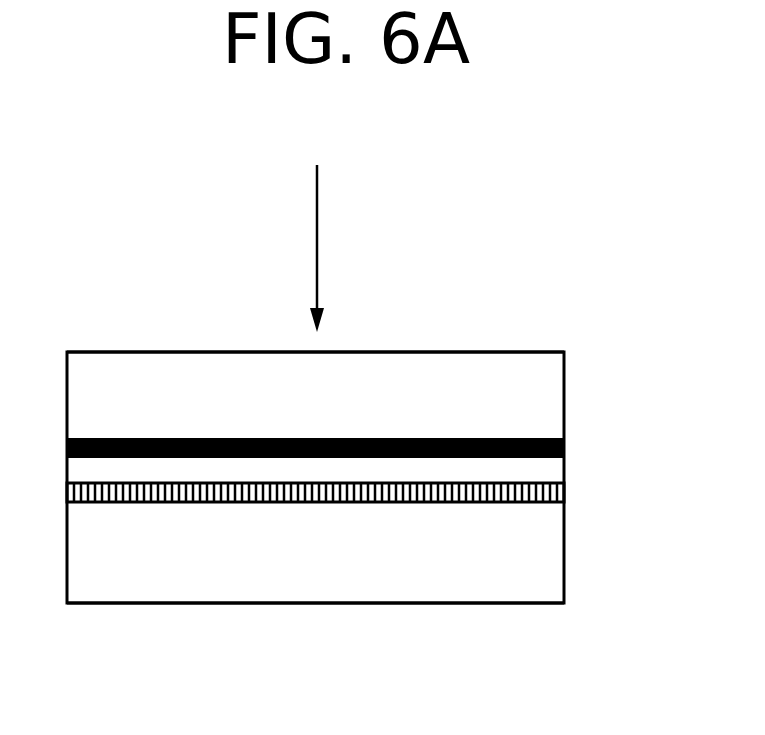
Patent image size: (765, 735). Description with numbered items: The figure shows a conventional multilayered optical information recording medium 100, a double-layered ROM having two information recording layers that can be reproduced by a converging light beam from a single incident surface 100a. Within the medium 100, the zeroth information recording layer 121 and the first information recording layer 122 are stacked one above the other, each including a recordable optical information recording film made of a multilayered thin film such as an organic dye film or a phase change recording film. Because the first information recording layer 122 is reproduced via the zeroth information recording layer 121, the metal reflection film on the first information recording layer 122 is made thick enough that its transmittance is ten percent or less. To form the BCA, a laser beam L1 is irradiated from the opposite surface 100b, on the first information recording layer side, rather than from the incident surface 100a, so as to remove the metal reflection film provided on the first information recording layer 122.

The multilayered optical information recording medium 100 is at (128, 352).
The incident surface 100a is at (458, 605).
The top surface of substrate 100b is at (523, 352).
The 0-th information recording layer 121 is at (536, 483).
The first information recording layer 122 is at (537, 438).
The laser beam L1 is at (317, 223).